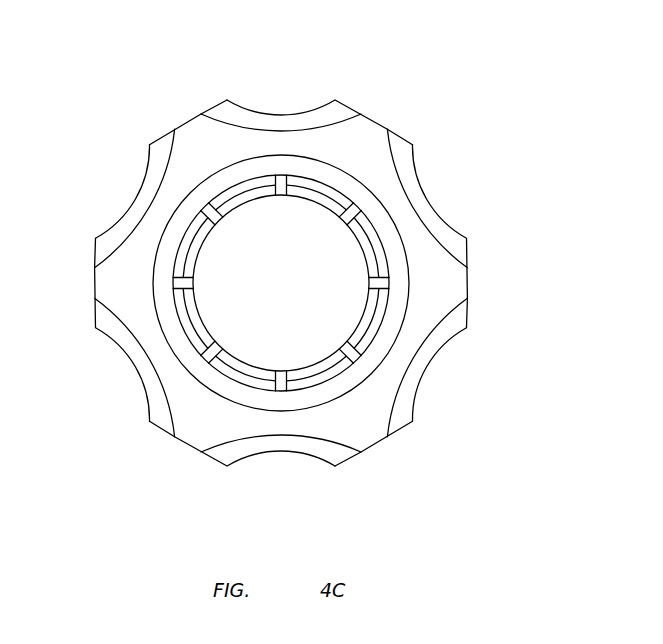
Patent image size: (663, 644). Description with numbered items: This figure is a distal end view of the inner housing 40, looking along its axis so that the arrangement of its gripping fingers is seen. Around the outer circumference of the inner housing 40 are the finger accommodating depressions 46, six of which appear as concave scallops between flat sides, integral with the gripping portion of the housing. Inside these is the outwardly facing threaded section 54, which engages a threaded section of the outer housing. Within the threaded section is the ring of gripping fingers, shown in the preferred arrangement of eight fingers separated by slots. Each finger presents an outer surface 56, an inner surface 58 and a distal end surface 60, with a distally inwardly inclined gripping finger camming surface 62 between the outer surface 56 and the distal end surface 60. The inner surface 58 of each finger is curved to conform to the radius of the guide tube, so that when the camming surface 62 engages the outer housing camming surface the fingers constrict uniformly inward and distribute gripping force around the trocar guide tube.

The inner housing 40 is at (280, 278).
The finger accommodating depressions 46 is at (308, 108).
The outwardly facing threaded section 54 is at (372, 196).
The outer surface 56 is at (332, 277).
The inner surface 58 is at (203, 243).
The distal end surface 60 is at (363, 320).
The gripping finger camming surface 62 is at (378, 318).